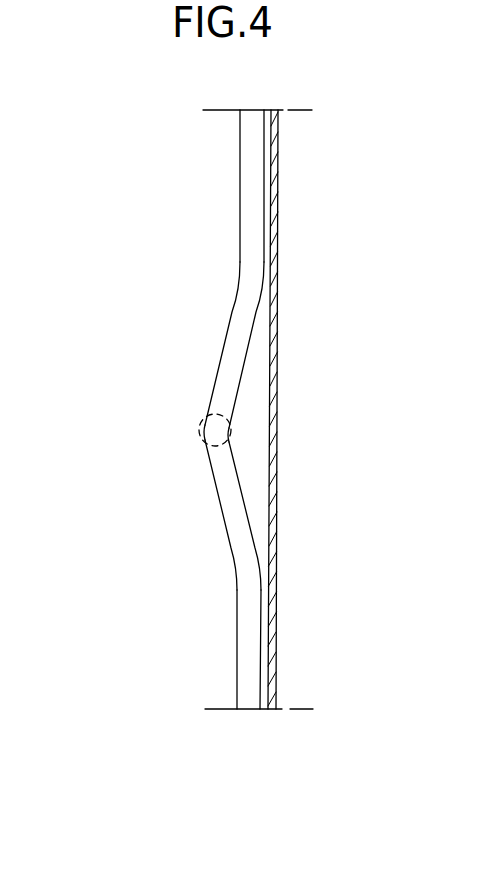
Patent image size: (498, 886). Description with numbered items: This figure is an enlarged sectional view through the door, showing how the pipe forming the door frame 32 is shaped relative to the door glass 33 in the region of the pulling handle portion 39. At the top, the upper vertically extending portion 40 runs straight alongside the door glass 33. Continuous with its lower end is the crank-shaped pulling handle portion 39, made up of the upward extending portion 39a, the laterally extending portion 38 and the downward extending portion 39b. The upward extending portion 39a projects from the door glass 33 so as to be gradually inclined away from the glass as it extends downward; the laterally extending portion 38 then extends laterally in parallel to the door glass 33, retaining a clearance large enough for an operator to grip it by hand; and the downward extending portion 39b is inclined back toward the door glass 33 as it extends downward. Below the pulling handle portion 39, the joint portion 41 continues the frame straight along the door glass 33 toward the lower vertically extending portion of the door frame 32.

The door frame 32 is at (230, 156).
The door glass 33 is at (278, 320).
The laterally extending portion 38 is at (208, 396).
The pulling handle portion 39 is at (227, 263).
The upward extending portion 39a is at (233, 368).
The downward extending portion 39b is at (228, 502).
The upper vertically extending portion 40 is at (240, 222).
The joint portion 41 is at (237, 652).